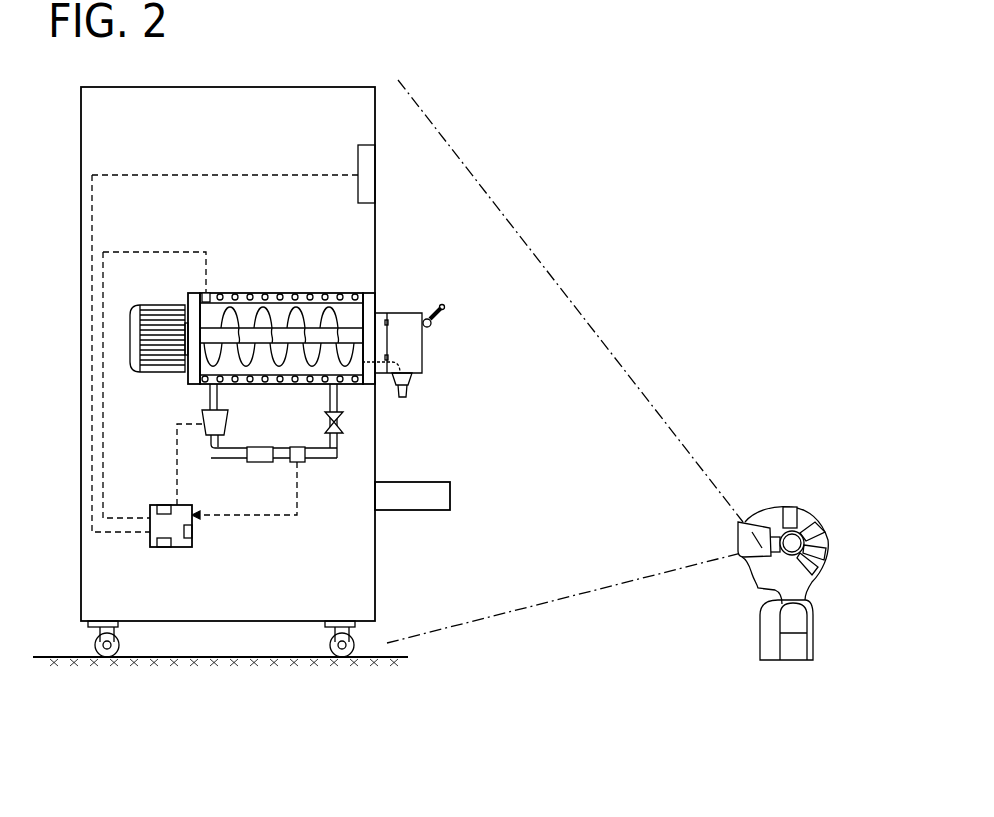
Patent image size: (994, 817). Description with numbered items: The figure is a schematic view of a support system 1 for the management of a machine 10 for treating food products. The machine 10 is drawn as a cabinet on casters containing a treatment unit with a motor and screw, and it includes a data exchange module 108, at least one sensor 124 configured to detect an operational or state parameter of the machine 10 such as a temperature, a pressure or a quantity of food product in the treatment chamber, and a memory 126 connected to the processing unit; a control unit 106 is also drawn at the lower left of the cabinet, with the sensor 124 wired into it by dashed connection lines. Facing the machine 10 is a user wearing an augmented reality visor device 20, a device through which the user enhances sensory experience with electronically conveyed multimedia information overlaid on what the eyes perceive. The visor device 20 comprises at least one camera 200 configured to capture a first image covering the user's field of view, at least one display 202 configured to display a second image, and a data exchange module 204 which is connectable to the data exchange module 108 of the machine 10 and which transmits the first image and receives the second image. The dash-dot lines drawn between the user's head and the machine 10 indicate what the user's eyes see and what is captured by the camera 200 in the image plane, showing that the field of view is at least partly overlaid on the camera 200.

The support system 1 is at (640, 172).
The machine for treating food products 10 is at (367, 81).
The augmented reality visor device 20 is at (749, 580).
The control unit 106 is at (149, 543).
The data exchange module 108 is at (192, 532).
The sensor 124 is at (206, 292).
The memory 126 is at (165, 547).
The camera 200 is at (738, 494).
The display 202 is at (738, 537).
The data exchange module 204 is at (800, 506).